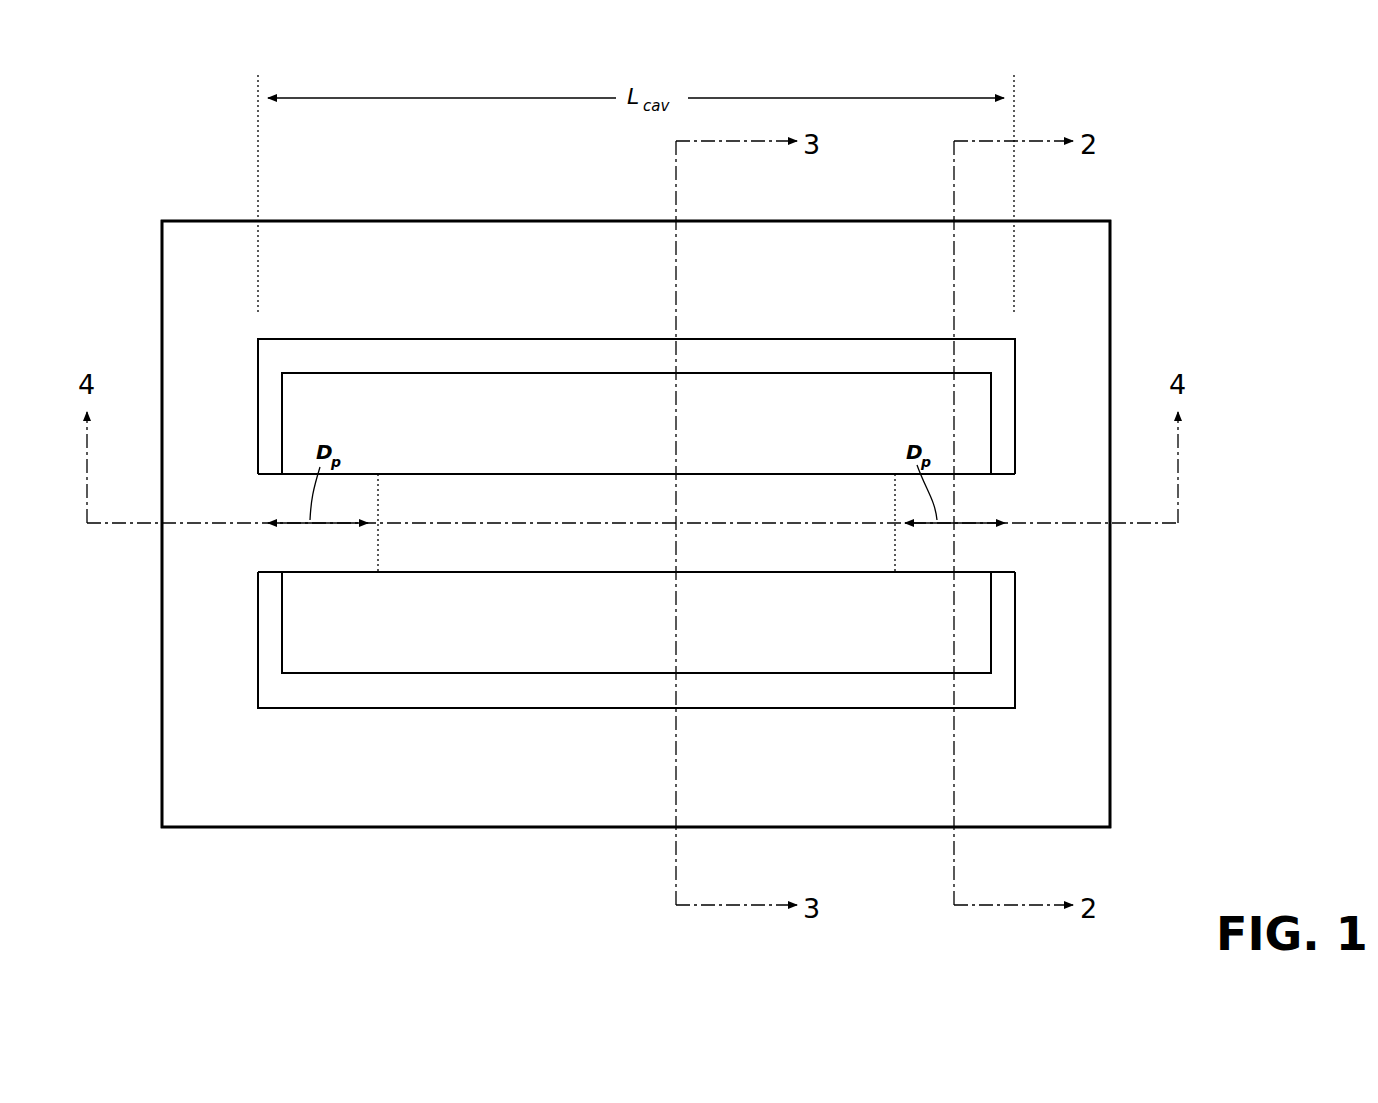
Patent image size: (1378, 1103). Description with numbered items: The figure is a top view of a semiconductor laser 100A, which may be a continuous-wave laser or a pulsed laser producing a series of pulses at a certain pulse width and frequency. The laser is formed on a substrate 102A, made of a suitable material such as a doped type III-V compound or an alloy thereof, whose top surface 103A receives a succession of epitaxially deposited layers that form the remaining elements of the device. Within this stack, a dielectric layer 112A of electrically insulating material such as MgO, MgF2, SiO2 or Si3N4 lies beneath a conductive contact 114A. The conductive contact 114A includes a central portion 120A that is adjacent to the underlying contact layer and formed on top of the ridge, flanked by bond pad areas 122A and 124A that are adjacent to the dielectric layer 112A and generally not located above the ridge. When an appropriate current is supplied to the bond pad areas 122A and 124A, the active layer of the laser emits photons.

The semiconductor laser 100A is at (1204, 96).
The substrate 102A is at (1082, 307).
The top surface 103A is at (1077, 783).
The dielectric layer 112A is at (364, 355).
The conductive contact 114A is at (392, 648).
The central portion 120A is at (536, 540).
The bond pad area 122A is at (318, 622).
The bond pad area 124A is at (497, 405).